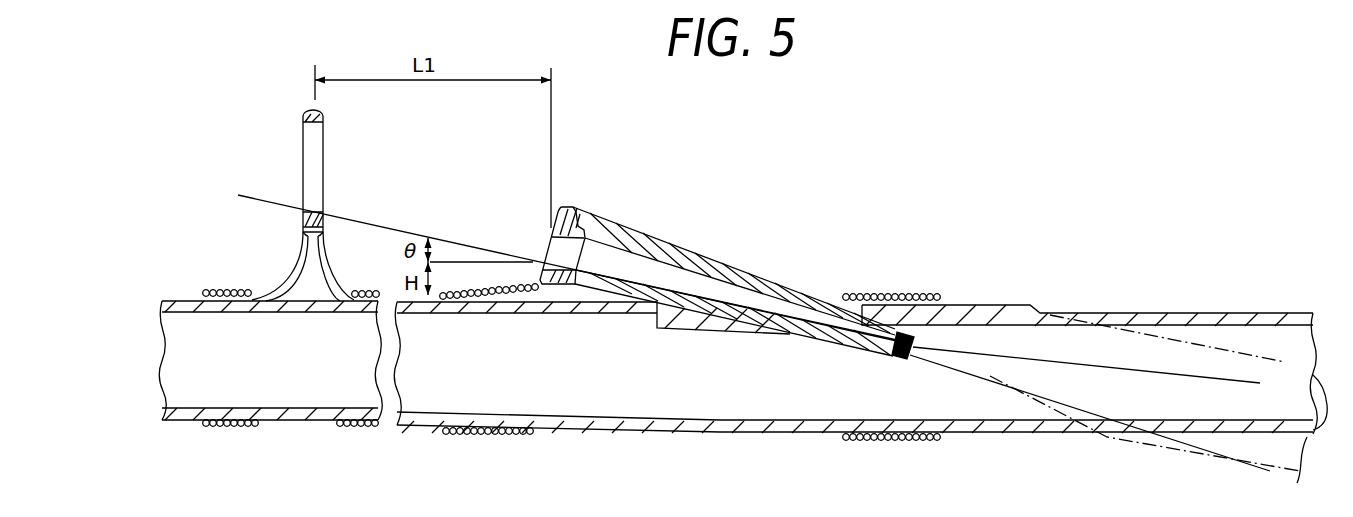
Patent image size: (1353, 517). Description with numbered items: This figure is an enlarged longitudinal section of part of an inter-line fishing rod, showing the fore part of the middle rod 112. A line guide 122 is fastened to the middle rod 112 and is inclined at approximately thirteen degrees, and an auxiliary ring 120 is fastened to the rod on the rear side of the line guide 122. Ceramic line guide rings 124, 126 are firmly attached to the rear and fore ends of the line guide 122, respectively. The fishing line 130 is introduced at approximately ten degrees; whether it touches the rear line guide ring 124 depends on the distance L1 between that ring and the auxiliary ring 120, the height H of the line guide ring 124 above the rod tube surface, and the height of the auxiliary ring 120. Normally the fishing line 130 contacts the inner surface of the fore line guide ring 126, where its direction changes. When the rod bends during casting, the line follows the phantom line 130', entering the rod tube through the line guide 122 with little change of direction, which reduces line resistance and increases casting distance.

The middle rod 112 is at (676, 430).
The auxiliary ring 120 is at (304, 112).
The line guide 122 is at (740, 272).
The line guide ring 124 is at (563, 208).
The line guide ring 126 is at (896, 360).
The fishing line 130 is at (567, 251).
The phantom line 130' is at (1105, 400).